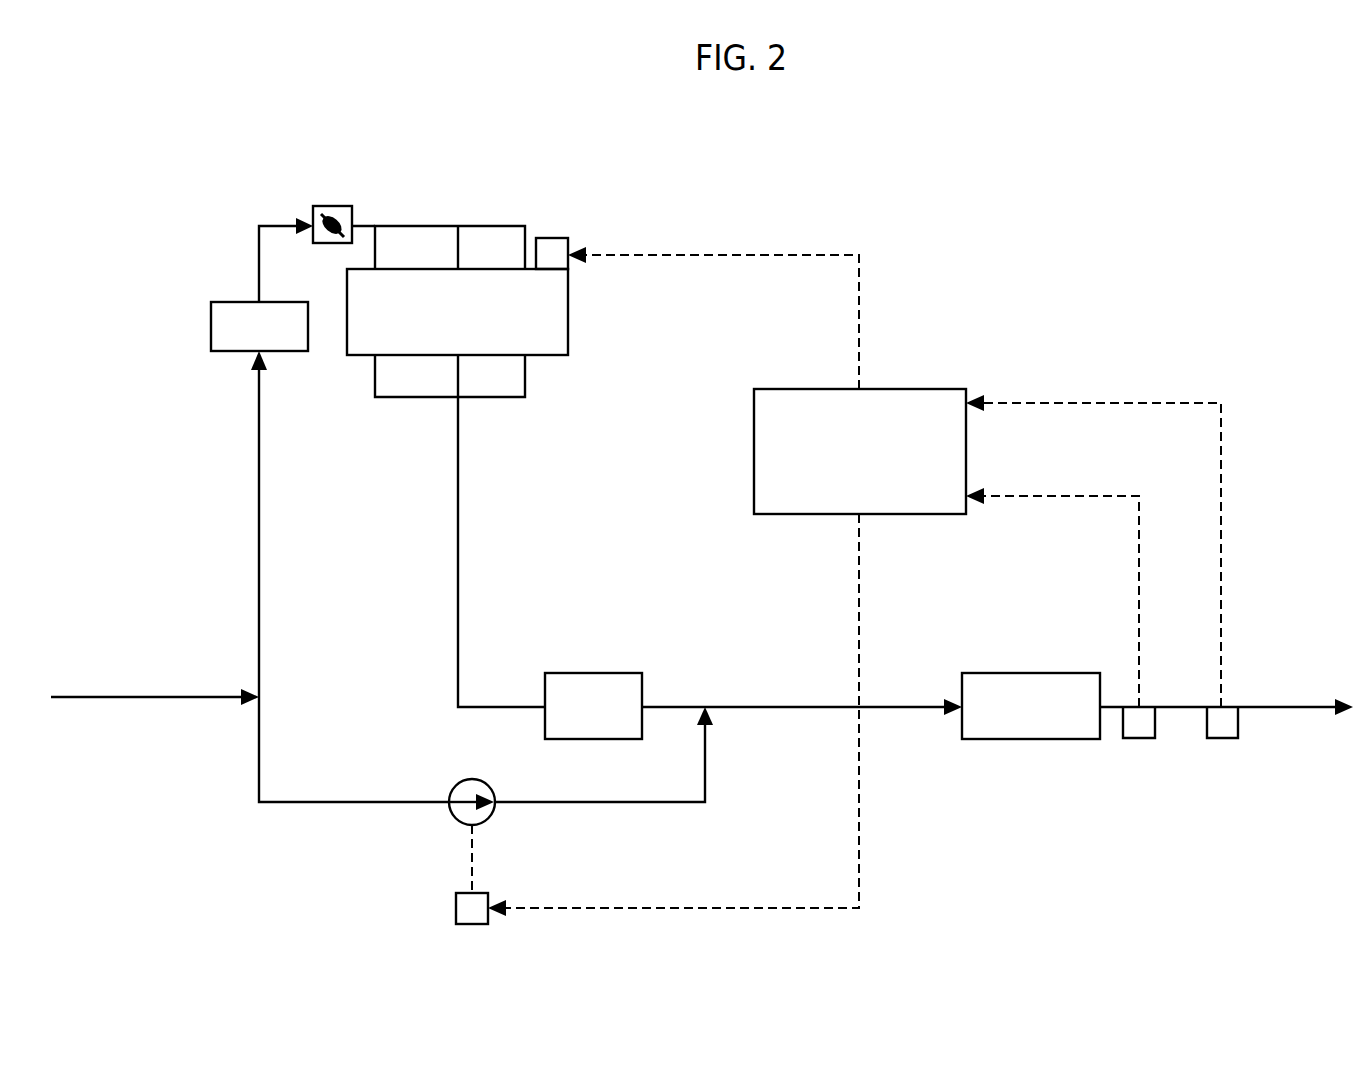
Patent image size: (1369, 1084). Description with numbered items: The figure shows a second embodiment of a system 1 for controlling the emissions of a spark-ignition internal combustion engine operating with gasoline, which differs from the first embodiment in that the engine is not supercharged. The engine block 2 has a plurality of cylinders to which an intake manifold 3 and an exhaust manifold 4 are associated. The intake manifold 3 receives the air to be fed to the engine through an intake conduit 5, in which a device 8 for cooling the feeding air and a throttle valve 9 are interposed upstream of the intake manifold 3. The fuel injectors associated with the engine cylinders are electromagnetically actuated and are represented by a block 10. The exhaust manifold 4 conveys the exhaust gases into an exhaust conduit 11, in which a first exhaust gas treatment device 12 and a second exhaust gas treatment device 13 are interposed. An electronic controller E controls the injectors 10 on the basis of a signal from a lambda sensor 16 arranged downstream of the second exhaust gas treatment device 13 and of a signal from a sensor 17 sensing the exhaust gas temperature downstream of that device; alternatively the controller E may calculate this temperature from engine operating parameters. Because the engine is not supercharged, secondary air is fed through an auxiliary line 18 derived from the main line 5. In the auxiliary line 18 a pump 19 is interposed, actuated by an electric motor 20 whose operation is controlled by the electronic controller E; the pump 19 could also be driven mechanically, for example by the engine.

The system for controlling the emissions of a spark-ignition internal combustion eng 1 is at (1143, 230).
The engine block 2 is at (579, 310).
The intake manifold 3 is at (488, 218).
The exhaust manifold 4 is at (504, 403).
The intake conduit 5 is at (116, 706).
The device for cooling the feeding air 8 is at (223, 353).
The throttle valve 9 is at (333, 210).
The fuel injectors 10 is at (557, 246).
The exhaust conduit 11 is at (466, 490).
The first exhaust gas treatment device 12 is at (596, 679).
The second exhaust gas treatment device 13 is at (1040, 684).
The lambda sensor 16 is at (1138, 734).
The temperature sensor 17 is at (1222, 734).
The auxiliary line 18 is at (331, 806).
The pump 19 is at (458, 817).
The electric motor 20 is at (466, 917).
The electronic controller E is at (809, 503).